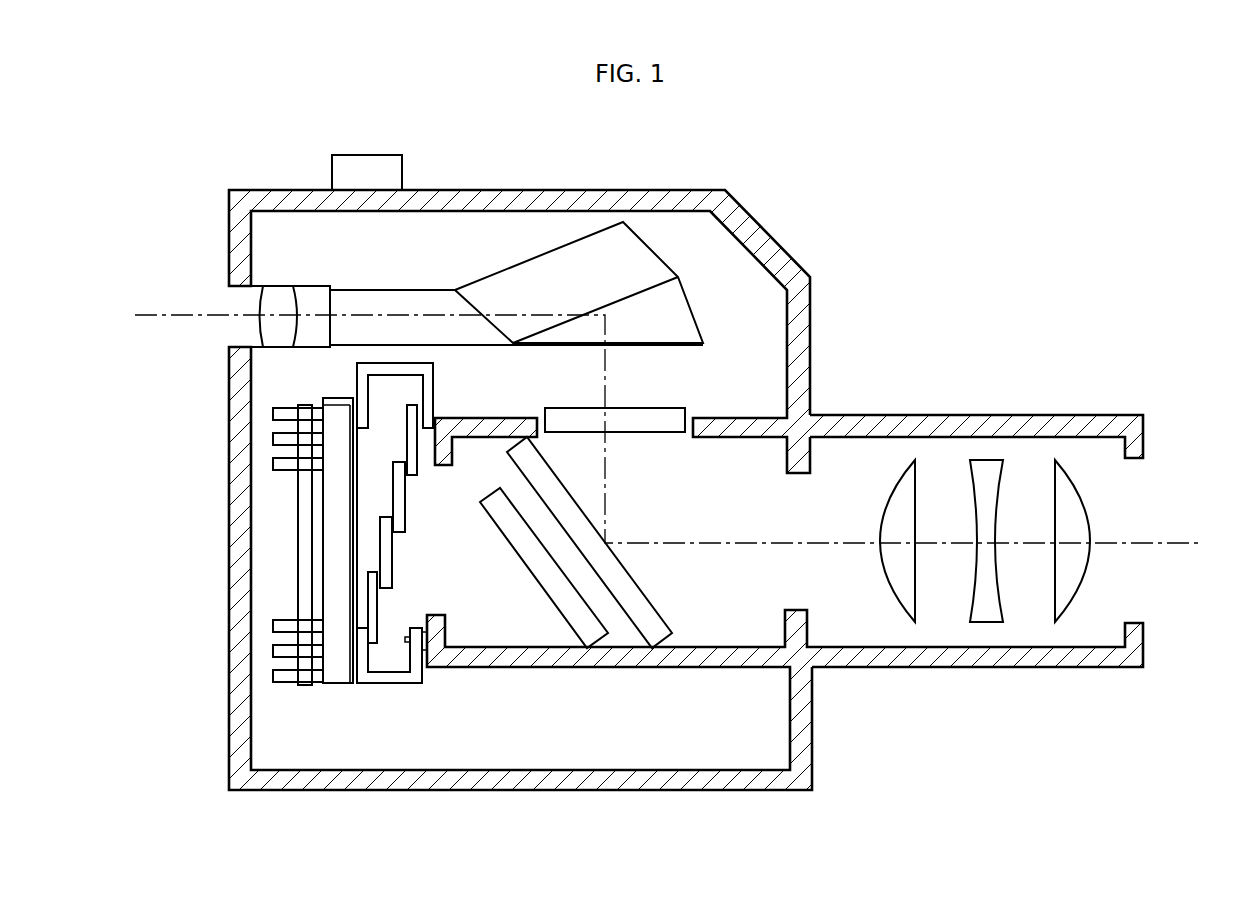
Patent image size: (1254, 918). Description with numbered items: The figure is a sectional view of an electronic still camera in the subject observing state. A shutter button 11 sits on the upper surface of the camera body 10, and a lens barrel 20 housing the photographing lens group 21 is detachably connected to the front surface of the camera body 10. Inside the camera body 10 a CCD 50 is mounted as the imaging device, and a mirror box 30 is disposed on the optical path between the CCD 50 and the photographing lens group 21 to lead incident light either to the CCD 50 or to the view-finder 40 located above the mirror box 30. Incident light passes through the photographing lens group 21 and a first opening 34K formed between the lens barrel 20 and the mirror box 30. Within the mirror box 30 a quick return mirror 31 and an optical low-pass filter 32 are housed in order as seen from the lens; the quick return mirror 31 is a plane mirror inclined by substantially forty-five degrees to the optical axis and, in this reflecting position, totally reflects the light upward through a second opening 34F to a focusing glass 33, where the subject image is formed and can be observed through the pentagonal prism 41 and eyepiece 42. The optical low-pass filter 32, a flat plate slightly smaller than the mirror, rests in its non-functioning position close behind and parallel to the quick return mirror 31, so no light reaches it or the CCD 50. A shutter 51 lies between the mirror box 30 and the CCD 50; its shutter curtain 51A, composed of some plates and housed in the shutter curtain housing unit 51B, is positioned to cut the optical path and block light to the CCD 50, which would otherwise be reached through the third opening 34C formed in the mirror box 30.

The camera body 10 is at (257, 805).
The shutter button 11 is at (366, 154).
The lens barrel 20 is at (909, 400).
The photographing lens group 21 is at (1032, 447).
The mirror box 30 is at (771, 673).
The quick return mirror 31 is at (659, 590).
The optical low-pass filter 32 is at (548, 600).
The focusing glass 33 is at (645, 408).
The third opening 34C is at (437, 615).
The second opening 34F is at (688, 438).
The first opening 34K is at (797, 610).
The view-finder 40 is at (488, 239).
The pentagonal prism 41 is at (700, 304).
The eyepiece 42 is at (313, 286).
The CCD 50 is at (338, 398).
The shutter 51 is at (396, 700).
The shutter curtain 51A is at (412, 400).
The shutter curtain housing unit 51B is at (434, 368).